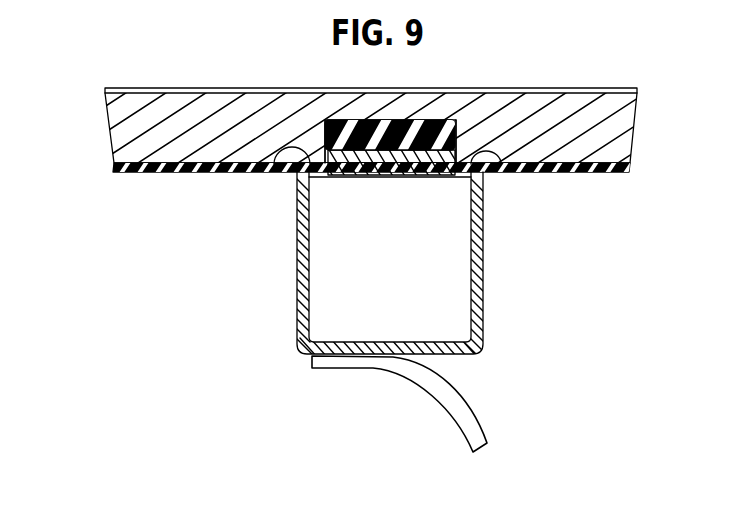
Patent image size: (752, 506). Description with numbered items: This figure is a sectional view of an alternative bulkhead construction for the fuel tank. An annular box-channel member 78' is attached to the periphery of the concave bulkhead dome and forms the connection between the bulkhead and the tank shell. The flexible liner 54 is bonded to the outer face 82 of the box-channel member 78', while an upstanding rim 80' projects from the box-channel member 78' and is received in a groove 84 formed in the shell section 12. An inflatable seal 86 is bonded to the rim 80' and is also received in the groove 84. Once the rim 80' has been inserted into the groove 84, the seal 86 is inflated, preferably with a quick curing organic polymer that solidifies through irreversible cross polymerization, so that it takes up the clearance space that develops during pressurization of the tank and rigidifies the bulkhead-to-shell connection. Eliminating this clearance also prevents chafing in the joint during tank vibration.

The shell section 12 is at (556, 107).
The flexible liner 54 is at (185, 168).
The annular box-channel member 78' is at (435, 272).
The upstanding rim 80' is at (391, 202).
The outer face 82 is at (274, 164).
The groove 84 is at (412, 120).
The inflatable seal 86 is at (342, 120).